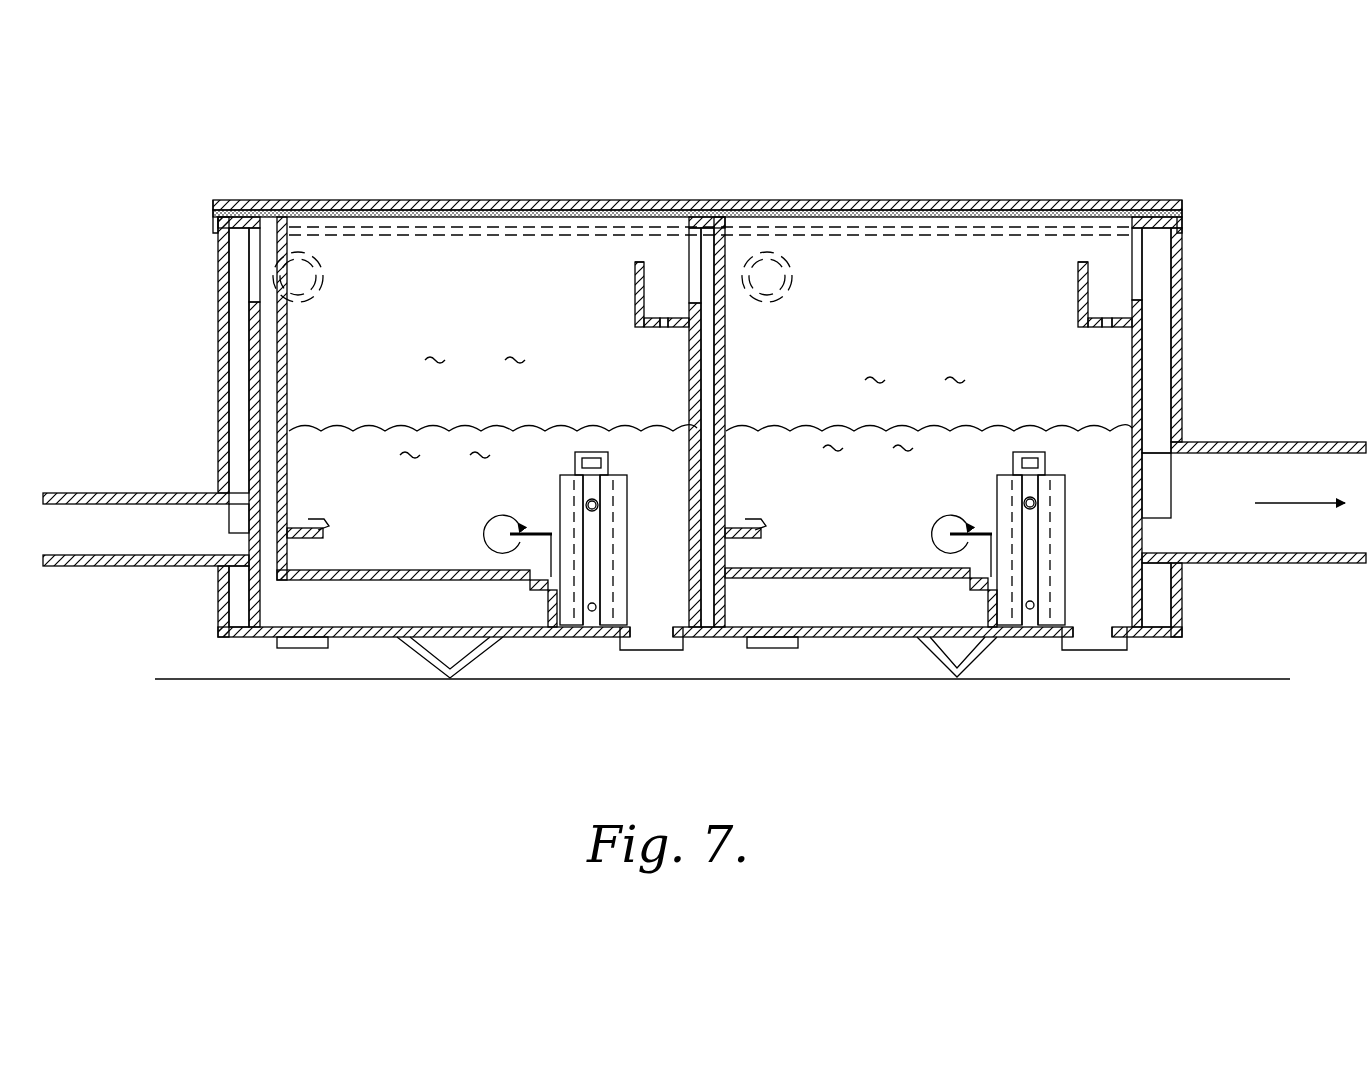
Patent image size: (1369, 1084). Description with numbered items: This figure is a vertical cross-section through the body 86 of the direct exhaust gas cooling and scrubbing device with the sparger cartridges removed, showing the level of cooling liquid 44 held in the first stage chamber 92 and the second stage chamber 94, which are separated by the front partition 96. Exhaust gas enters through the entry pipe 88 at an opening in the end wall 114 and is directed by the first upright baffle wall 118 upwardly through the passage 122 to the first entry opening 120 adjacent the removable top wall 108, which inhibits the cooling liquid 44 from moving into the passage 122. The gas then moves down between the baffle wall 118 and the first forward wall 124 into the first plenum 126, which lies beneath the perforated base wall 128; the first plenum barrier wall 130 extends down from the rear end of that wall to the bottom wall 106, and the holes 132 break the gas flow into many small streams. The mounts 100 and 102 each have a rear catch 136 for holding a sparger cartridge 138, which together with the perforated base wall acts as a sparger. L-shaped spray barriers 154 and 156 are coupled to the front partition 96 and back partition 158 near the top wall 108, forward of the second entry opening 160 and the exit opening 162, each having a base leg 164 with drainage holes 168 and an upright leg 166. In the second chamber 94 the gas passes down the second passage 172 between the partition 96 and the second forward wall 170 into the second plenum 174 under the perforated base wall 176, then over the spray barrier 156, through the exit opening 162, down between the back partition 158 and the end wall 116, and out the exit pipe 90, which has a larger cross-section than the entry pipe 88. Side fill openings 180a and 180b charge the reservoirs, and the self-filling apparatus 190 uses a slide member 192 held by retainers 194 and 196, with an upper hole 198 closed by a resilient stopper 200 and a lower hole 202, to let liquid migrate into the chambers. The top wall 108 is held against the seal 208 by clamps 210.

The cooling liquid 44 is at (710, 446).
The body 86 is at (987, 196).
The entry pipe 88 is at (75, 493).
The exit pipe 90 is at (1305, 442).
The first stage chamber 92 is at (475, 360).
The second stage chamber 94 is at (915, 380).
The partition 96 is at (690, 405).
The mount 100 is at (330, 531).
The mount 102 is at (765, 530).
The bottom wall 106 is at (352, 637).
The removable top wall 108 is at (573, 201).
The end wall 114 is at (220, 418).
The end wall 116 is at (1175, 312).
The first upright baffle wall 118 is at (253, 330).
The first entry opening 120 is at (255, 268).
The passage 122 is at (240, 360).
The first forward wall 124 is at (288, 372).
The first plenum 126 is at (382, 603).
The perforated base wall 128 is at (348, 569).
The first plenum barrier wall 130 is at (547, 607).
The holes 132 is at (910, 568).
The rear catch 136 is at (312, 519).
The sparger cartridge 138 is at (547, 517).
The L-shaped spray barrier 154 is at (634, 300).
The L-shaped spray barrier 156 is at (1077, 300).
The back partition 158 is at (1144, 365).
The second entry opening 160 is at (694, 255).
The exit opening 162 is at (1137, 265).
The base leg 164 is at (640, 327).
The upright leg 166 is at (634, 270).
The drainage holes 168 is at (663, 317).
The second forward wall 170 is at (726, 360).
The second passage 172 is at (713, 580).
The second plenum 174 is at (850, 610).
The perforated base wall 176 is at (768, 568).
The first side fill opening 180a is at (300, 288).
The second side fill opening 180b is at (768, 281).
The self-filling apparatus 190 is at (609, 465).
The slide member 192 is at (588, 450).
The retainer 194 is at (566, 478).
The retainer 196 is at (618, 557).
The upper hole 198 is at (598, 503).
The resilient stopper 200 is at (590, 508).
The lower hole 202 is at (598, 607).
The seal 208 is at (800, 217).
The clamps 210 is at (216, 204).